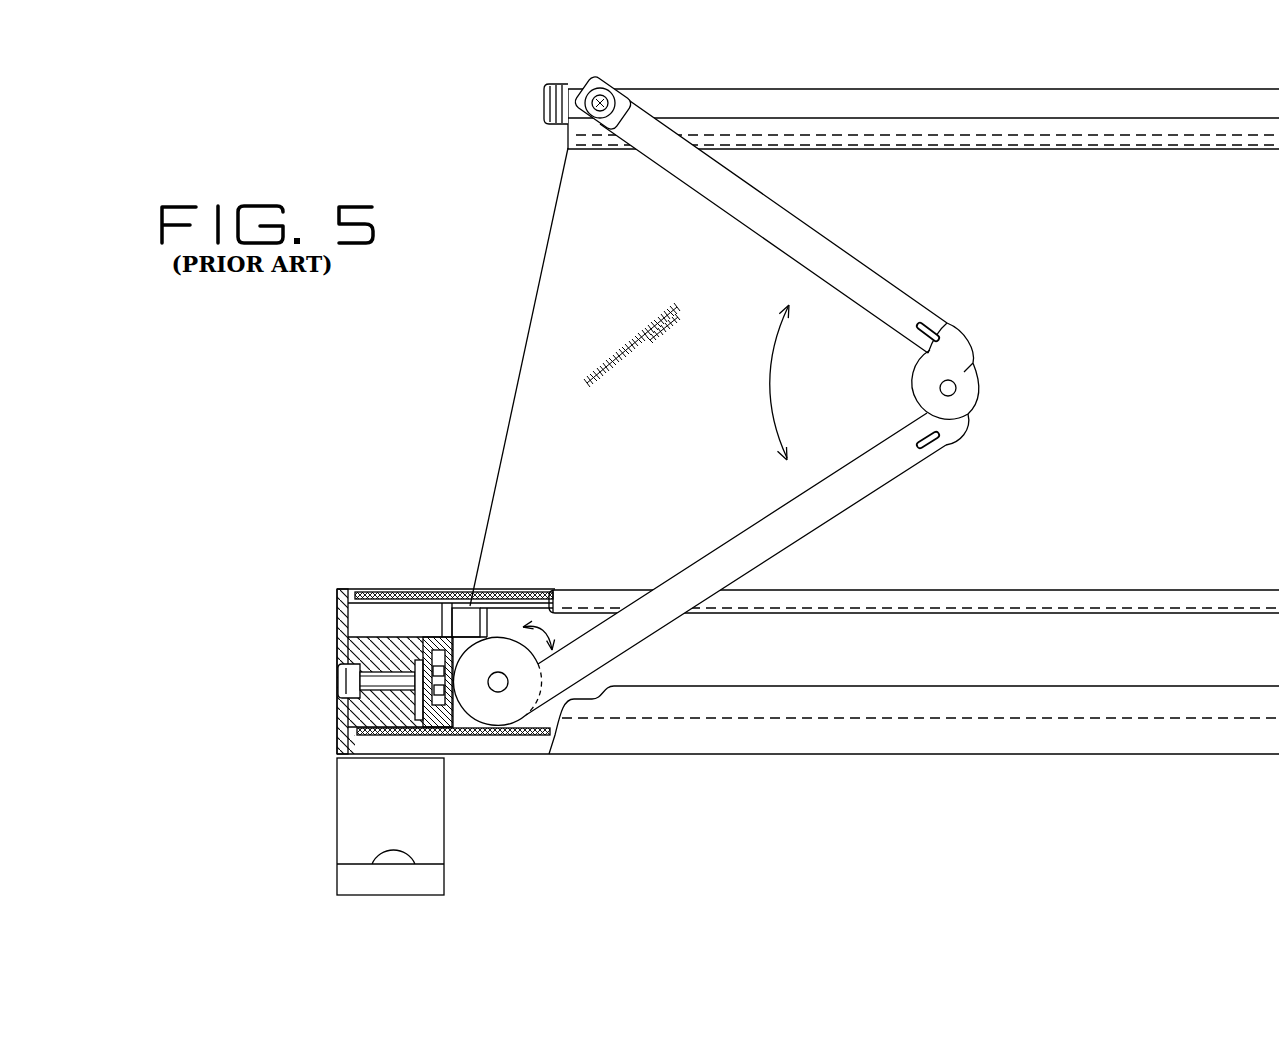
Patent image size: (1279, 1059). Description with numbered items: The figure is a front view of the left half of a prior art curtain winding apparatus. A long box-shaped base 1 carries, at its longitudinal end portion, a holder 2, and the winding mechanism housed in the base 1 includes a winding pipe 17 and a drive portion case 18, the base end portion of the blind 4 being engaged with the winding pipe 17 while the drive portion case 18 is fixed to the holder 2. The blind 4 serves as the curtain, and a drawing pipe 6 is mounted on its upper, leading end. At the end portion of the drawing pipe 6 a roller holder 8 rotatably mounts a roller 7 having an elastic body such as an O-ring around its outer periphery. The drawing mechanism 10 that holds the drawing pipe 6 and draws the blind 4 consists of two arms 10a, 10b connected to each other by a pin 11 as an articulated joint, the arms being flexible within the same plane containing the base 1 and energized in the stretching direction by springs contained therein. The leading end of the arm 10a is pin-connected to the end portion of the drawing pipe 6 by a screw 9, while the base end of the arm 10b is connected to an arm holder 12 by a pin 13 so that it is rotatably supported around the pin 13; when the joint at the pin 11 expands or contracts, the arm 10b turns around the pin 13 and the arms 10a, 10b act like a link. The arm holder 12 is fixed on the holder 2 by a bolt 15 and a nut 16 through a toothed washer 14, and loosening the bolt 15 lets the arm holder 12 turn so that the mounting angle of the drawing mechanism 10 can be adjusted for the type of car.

The base 1 is at (383, 588).
The holder 2 is at (337, 630).
The blind 4 is at (537, 323).
The drawing pipe 6 is at (815, 95).
The roller 7 is at (553, 82).
The roller holder 8 is at (542, 112).
The screw 9 is at (610, 98).
The drawing mechanism 10 is at (790, 397).
The arm 10a is at (825, 248).
The arm 10b is at (827, 523).
The pin 11 is at (957, 388).
The arm holder 12 is at (432, 635).
The pin 13 is at (502, 690).
The toothed washer 14 is at (417, 703).
The bolt 15 is at (338, 693).
The nut 16 is at (440, 700).
The winding pipe 17 is at (537, 590).
The drive portion case 18 is at (457, 607).